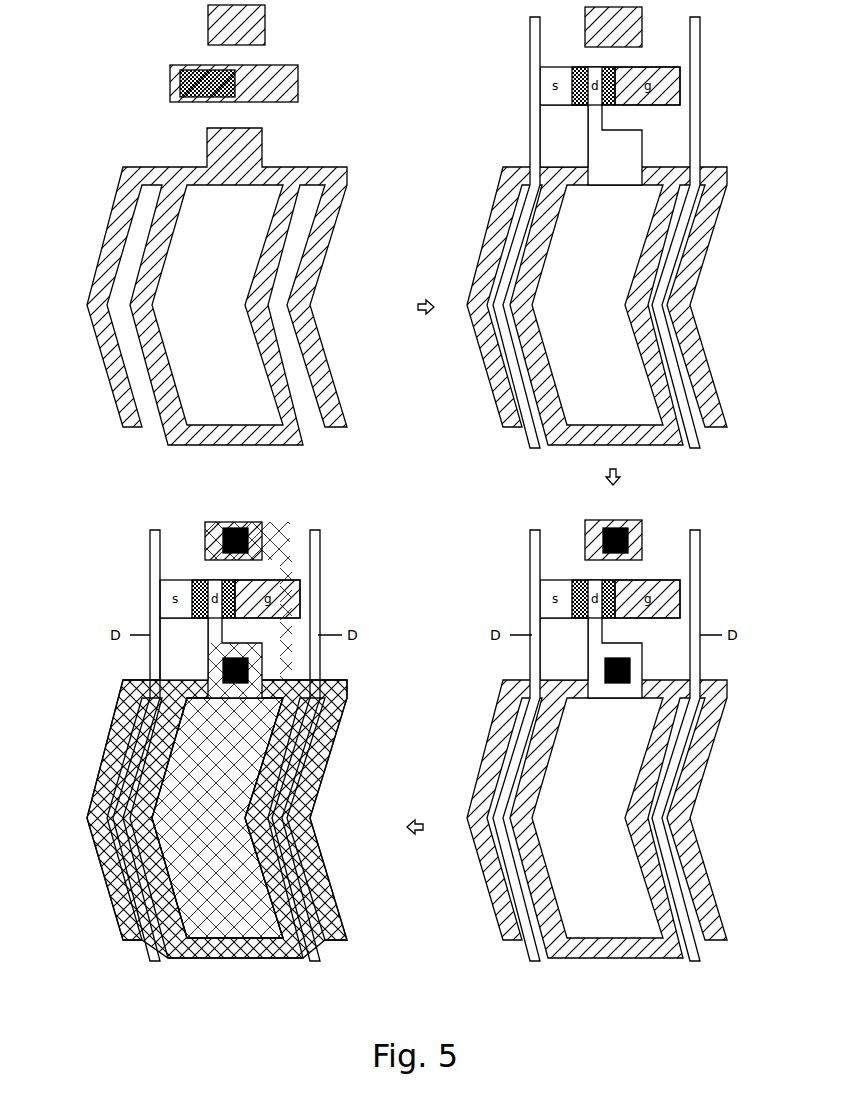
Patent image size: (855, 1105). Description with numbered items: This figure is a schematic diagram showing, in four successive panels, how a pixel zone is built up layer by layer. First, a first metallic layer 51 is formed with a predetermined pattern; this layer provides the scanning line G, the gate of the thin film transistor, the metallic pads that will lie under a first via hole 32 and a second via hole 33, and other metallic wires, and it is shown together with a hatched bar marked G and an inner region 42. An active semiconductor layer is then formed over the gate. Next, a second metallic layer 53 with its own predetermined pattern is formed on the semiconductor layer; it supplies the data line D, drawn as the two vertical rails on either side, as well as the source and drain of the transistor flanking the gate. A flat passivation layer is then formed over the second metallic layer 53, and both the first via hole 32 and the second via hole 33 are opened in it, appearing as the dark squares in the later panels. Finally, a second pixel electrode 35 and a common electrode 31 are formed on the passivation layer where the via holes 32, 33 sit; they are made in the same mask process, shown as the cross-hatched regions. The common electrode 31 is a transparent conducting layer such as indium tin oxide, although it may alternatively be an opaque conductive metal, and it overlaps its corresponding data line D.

The first metallic layer 51 is at (352, 296).
The gate insert region 42 is at (170, 82).
The second metallic layer 53 is at (705, 60).
The second via hole 33 is at (628, 540).
The first via hole 32 is at (605, 668).
The common electrode 31 is at (293, 782).
The second pixel electrode 35 is at (217, 818).
The scanning line G is at (298, 82).
The data line D is at (530, 120).